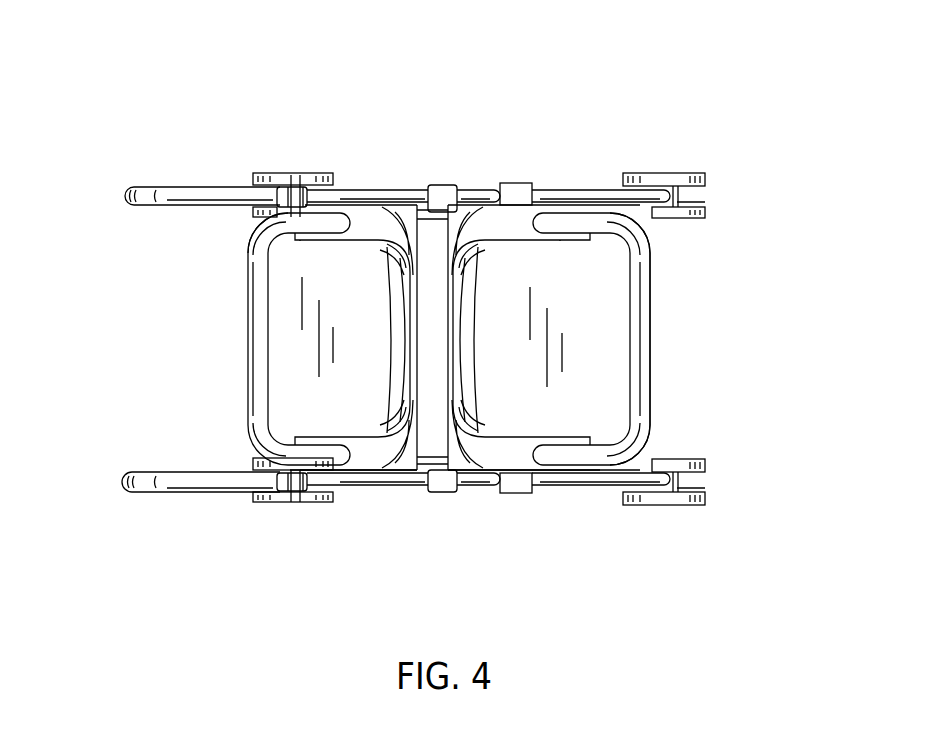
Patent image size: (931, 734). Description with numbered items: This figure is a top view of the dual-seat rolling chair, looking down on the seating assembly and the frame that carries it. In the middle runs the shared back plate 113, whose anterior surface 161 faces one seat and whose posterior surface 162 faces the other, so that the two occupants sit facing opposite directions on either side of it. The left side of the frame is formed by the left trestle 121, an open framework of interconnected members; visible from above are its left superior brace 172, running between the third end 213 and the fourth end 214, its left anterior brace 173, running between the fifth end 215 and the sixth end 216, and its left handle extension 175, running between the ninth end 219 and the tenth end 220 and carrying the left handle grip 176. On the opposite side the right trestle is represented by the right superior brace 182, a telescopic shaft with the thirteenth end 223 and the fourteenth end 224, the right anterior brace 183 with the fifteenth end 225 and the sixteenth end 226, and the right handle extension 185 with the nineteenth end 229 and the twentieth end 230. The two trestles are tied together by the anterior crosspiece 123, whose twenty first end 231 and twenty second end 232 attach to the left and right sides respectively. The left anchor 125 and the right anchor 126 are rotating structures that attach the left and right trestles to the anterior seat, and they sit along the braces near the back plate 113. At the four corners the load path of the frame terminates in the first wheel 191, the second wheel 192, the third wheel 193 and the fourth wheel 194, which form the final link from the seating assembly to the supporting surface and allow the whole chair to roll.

The back plate 113 is at (427, 250).
The left trestle 121 is at (164, 334).
The anterior crosspiece 123 is at (652, 336).
The left anchor 125 is at (513, 183).
The right anchor 126 is at (513, 493).
The anterior surface 161 is at (450, 340).
The posterior surface 162 is at (417, 323).
The left superior brace 172 is at (376, 203).
The left anterior brace 173 is at (586, 204).
The left handle extension 175 is at (292, 188).
The left handle grip 176 is at (144, 187).
The right superior brace 182 is at (376, 472).
The right anterior brace 183 is at (587, 474).
The right handle extension 185 is at (292, 503).
The first wheel 191 is at (258, 218).
The second wheel 192 is at (680, 173).
The third wheel 193 is at (682, 505).
The fourth wheel 194 is at (263, 462).
The third end 213 is at (341, 187).
The fourth end 214 is at (498, 190).
The fifth end 215 is at (536, 190).
The sixth end 216 is at (675, 193).
The ninth end 219 is at (273, 174).
The tenth end 220 is at (299, 187).
The thirteenth end 223 is at (341, 488).
The fourteenth end 224 is at (498, 490).
The fifteenth end 225 is at (537, 486).
The sixteenth end 226 is at (675, 481).
The nineteenth end 229 is at (273, 504).
The twentieth end 230 is at (299, 503).
The twenty first end 231 is at (642, 224).
The twenty second end 232 is at (655, 446).